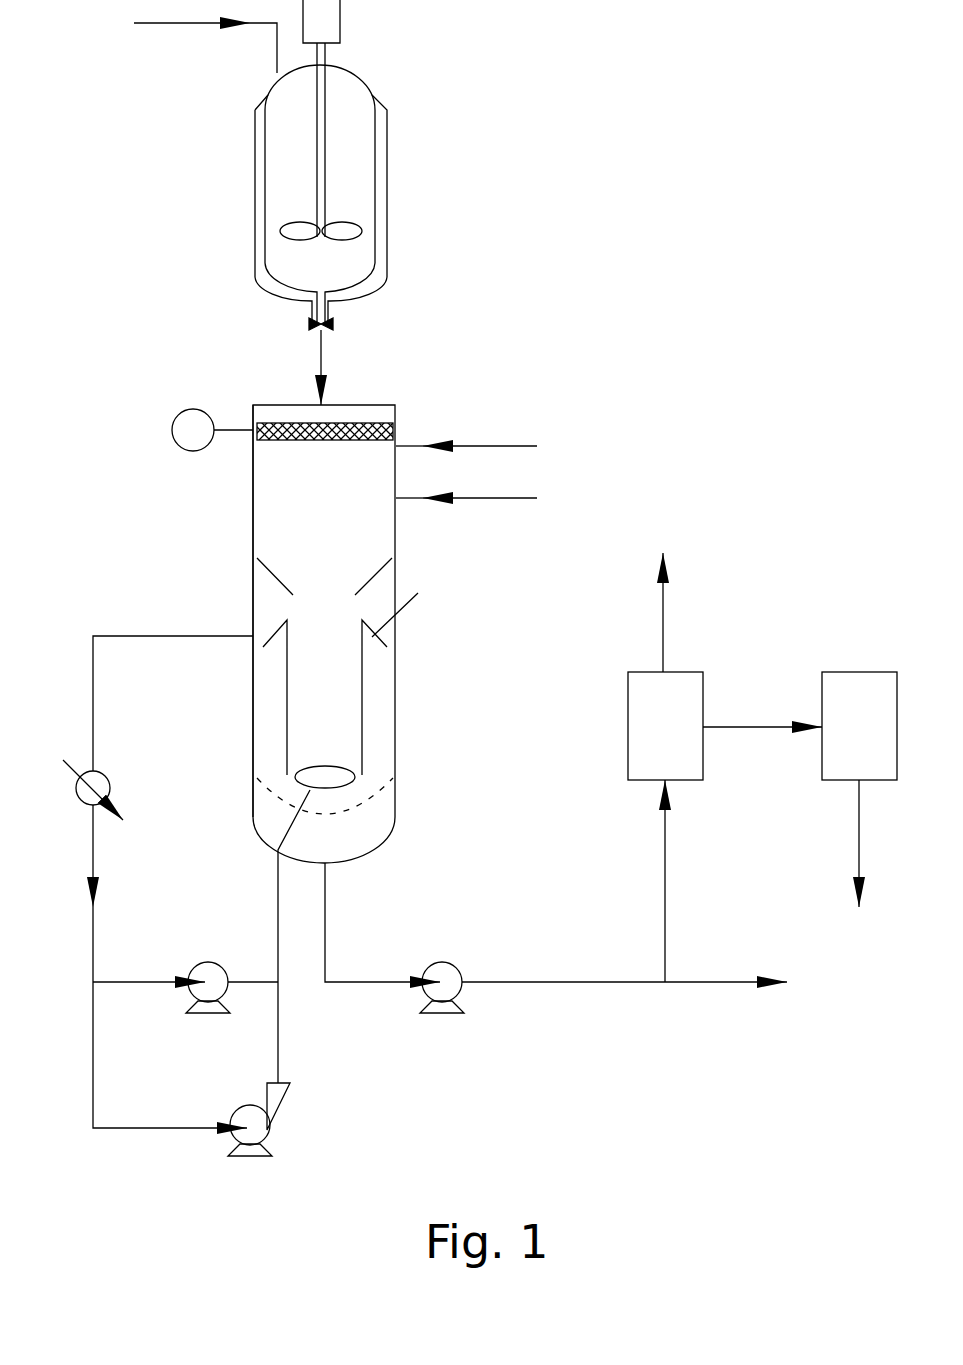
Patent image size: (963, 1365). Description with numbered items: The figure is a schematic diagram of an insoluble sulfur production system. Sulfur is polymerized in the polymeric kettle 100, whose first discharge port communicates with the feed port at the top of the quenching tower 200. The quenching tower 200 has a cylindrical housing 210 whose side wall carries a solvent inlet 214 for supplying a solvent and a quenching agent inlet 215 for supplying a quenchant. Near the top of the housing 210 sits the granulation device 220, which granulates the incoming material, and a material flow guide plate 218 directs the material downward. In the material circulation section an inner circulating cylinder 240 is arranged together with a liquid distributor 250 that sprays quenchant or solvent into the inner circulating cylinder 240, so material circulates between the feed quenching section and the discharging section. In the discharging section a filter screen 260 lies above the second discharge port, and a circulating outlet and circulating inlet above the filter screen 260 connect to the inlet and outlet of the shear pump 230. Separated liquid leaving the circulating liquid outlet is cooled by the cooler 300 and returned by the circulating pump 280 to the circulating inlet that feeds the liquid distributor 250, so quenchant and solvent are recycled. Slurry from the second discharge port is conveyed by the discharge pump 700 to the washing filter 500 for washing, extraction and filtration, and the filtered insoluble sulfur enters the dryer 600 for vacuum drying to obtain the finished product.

The polymeric kettle 100 is at (283, 197).
The quenching tower 200 is at (383, 611).
The housing 210 is at (252, 610).
The solvent inlet 214 is at (501, 443).
The quenching agent inlet 215 is at (501, 497).
The material flow guide plate 218 is at (285, 575).
The granulation device 220 is at (352, 427).
The shear pump 230 is at (237, 1118).
The inner circulating cylinder 240 is at (295, 705).
The liquid distributor 250 is at (325, 768).
The filter screen 260 is at (375, 797).
The circulating pump 280 is at (198, 950).
The cooler 300 is at (110, 783).
The washing filter 500 is at (725, 666).
The dryer 600 is at (859, 789).
The discharge pump 700 is at (453, 958).